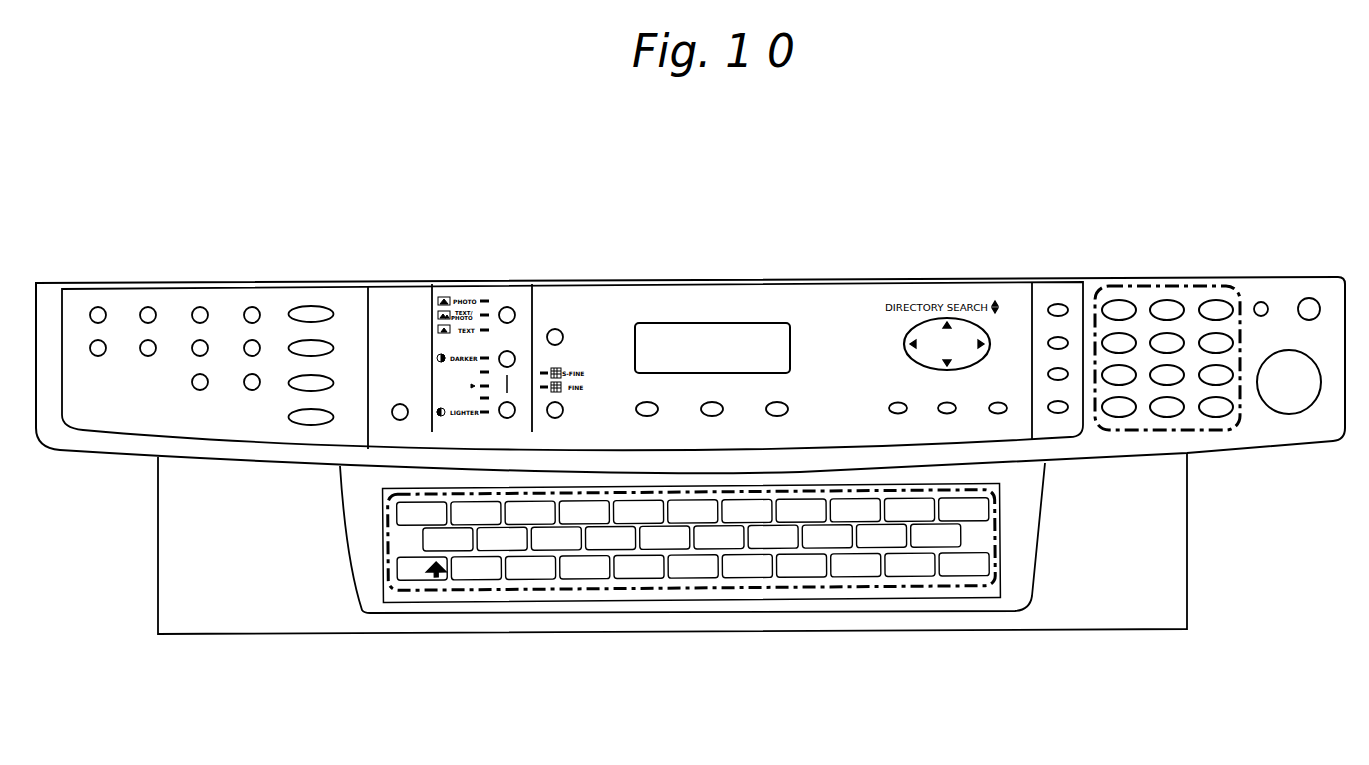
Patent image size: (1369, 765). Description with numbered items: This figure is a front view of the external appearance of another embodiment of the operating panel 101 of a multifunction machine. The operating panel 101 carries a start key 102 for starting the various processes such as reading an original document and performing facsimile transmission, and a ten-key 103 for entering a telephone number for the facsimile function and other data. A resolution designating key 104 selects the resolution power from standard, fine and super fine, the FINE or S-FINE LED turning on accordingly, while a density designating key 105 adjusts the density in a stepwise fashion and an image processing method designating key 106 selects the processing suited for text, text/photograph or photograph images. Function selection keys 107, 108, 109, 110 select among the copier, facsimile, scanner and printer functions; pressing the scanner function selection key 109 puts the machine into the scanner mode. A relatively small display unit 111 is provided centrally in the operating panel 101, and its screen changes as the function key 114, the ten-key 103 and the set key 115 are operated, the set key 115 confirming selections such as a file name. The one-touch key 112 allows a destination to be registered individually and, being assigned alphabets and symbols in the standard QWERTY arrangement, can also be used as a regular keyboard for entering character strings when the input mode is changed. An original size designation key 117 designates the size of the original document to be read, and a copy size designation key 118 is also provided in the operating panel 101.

The operating panel 101 is at (837, 276).
The start key 102 is at (1285, 414).
The ten-key 103 is at (1178, 284).
The resolution designating key 104 is at (563, 408).
The density designating key 105 is at (514, 404).
The image processing method designating key 106 is at (500, 308).
The function selection key 107 is at (298, 310).
The function selection key 108 is at (289, 349).
The scanner function selection key 109 is at (342, 380).
The function selection key 110 is at (334, 413).
The display unit 111 is at (755, 322).
The one-touch key 112 is at (875, 588).
The function key 114 is at (898, 416).
The set key 115 is at (998, 416).
The original size designation key 117 is at (648, 418).
The copy size designation key 118 is at (712, 418).